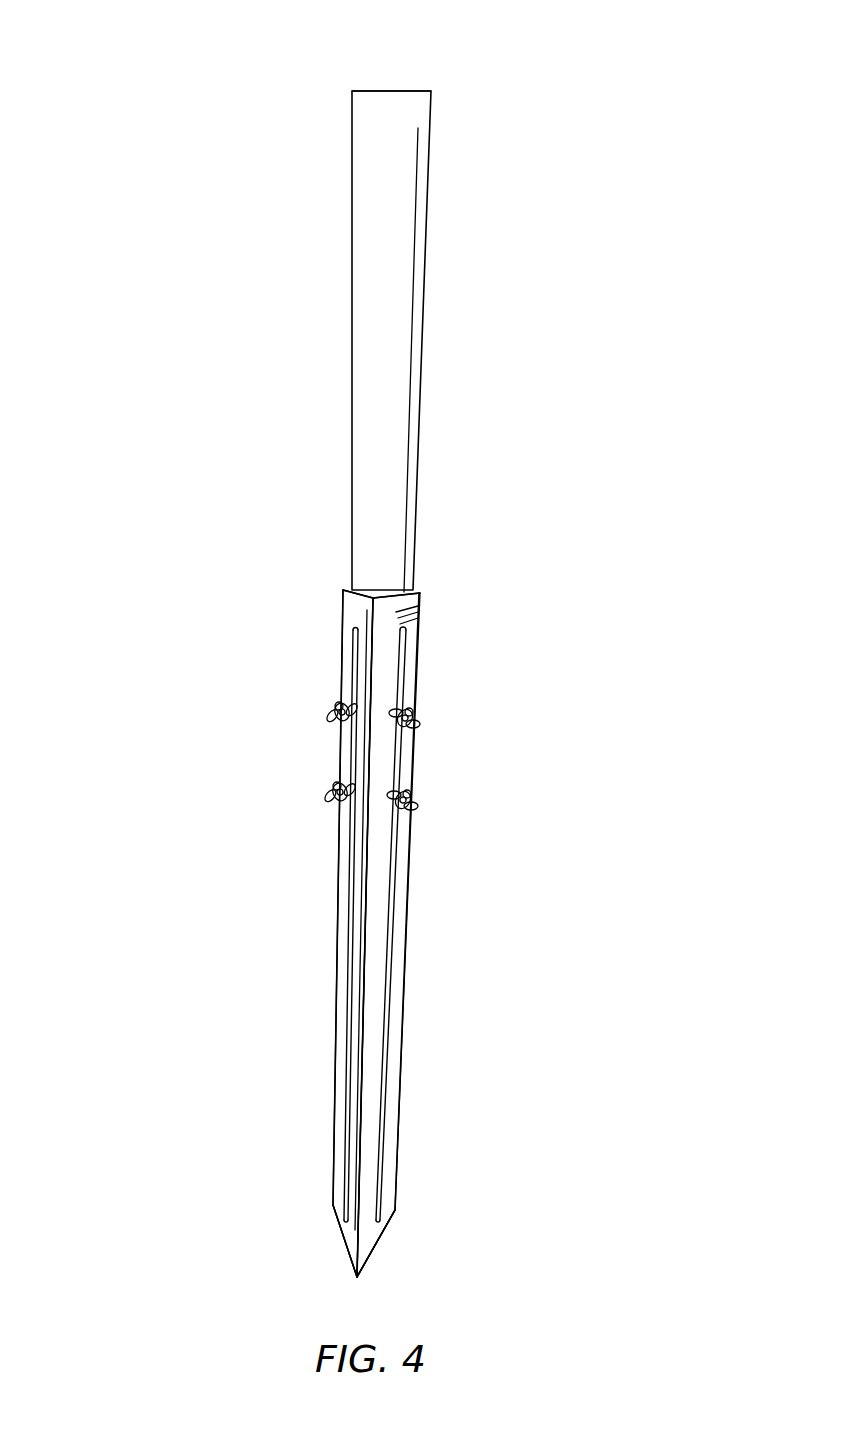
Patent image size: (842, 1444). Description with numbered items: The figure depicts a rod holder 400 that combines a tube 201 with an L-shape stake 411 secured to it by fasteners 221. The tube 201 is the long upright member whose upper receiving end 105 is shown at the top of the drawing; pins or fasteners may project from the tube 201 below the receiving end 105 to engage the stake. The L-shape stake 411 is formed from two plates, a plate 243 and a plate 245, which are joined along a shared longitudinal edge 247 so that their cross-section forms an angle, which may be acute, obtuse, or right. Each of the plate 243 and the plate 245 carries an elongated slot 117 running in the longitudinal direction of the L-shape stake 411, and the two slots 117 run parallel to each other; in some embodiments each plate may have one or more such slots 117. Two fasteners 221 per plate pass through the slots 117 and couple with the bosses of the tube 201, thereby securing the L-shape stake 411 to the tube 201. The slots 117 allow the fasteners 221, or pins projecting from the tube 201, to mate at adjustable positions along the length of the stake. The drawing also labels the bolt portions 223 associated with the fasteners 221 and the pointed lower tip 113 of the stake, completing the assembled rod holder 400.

The rod holder 400 is at (162, 150).
The receiving end 105 is at (403, 91).
The tube 201 is at (302, 424).
The L-shape stake 411 is at (490, 1039).
The plate 243 is at (357, 608).
The plate 245 is at (405, 601).
The slot 117 is at (398, 862).
The fastener 221 is at (318, 710).
The bolt 223 is at (338, 702).
The pointed tip of stake 113 is at (343, 1241).
The shared longitudinal edge 247 is at (360, 1213).